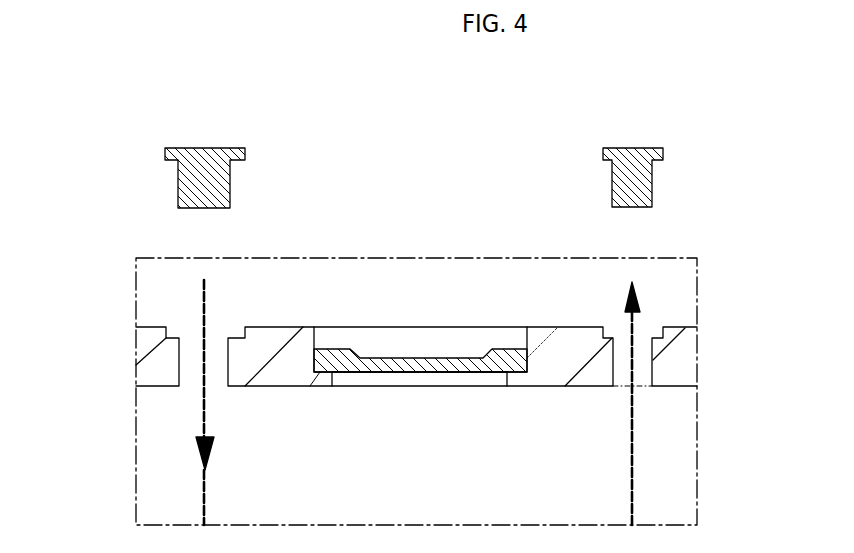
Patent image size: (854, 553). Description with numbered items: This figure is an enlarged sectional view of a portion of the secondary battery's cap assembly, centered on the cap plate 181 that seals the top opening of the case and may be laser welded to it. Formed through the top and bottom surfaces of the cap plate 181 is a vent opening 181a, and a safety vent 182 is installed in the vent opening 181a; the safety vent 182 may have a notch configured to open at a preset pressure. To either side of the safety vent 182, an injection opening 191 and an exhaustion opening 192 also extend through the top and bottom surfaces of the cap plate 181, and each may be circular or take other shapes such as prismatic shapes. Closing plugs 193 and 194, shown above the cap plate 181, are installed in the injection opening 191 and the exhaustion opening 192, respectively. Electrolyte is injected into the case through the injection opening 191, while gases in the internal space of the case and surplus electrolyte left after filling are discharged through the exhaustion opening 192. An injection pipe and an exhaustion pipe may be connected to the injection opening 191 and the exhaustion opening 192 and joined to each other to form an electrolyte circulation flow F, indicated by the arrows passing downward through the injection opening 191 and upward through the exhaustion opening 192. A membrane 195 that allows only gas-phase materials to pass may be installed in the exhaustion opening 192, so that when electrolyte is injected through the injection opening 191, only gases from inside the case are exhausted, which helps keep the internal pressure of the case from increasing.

The electrolyte circulation flow F is at (202, 300).
The cap plate 181 is at (273, 340).
The vent opening 181a is at (333, 378).
The safety vent 182 is at (503, 365).
The injection opening 191 is at (180, 362).
The exhaustion opening 192 is at (648, 357).
The closing plug 193 is at (202, 148).
The closing plug 194 is at (630, 148).
The membrane 195 is at (638, 386).